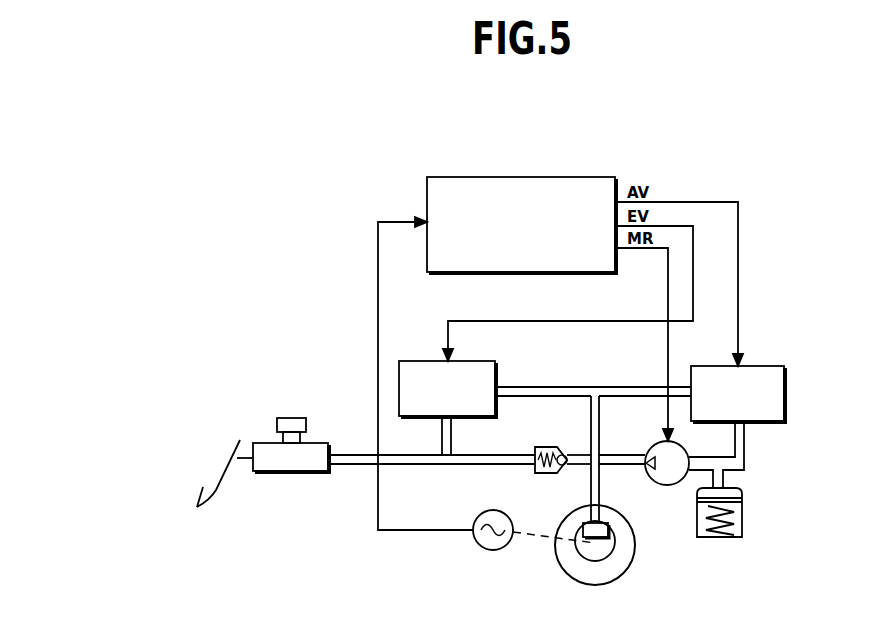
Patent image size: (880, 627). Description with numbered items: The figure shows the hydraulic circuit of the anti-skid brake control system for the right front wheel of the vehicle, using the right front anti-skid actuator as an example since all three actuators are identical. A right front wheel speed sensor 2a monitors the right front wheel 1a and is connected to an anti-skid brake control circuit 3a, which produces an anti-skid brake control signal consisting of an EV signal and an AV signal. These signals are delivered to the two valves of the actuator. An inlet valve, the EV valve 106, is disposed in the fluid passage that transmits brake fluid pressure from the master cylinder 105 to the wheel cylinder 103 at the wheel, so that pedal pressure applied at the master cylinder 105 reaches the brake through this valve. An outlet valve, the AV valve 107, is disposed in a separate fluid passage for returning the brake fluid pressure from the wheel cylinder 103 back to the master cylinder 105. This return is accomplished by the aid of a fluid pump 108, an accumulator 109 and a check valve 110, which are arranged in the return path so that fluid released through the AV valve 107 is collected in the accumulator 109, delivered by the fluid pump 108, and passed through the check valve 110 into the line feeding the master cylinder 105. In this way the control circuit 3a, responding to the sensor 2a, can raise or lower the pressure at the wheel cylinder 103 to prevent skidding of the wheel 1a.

The anti-skid brake control circuit 3a is at (590, 177).
The inlet valve (EV valve) 106 is at (421, 361).
The outlet valve (AV valve) 107 is at (712, 366).
The master cylinder 105 is at (265, 443).
The check valve 110 is at (559, 447).
The fluid pump 108 is at (651, 447).
The accumulator 109 is at (742, 517).
The wheel cylinder 103 is at (583, 528).
The right front wheel speed sensor 2a is at (479, 516).
The right front wheel 1a is at (628, 562).